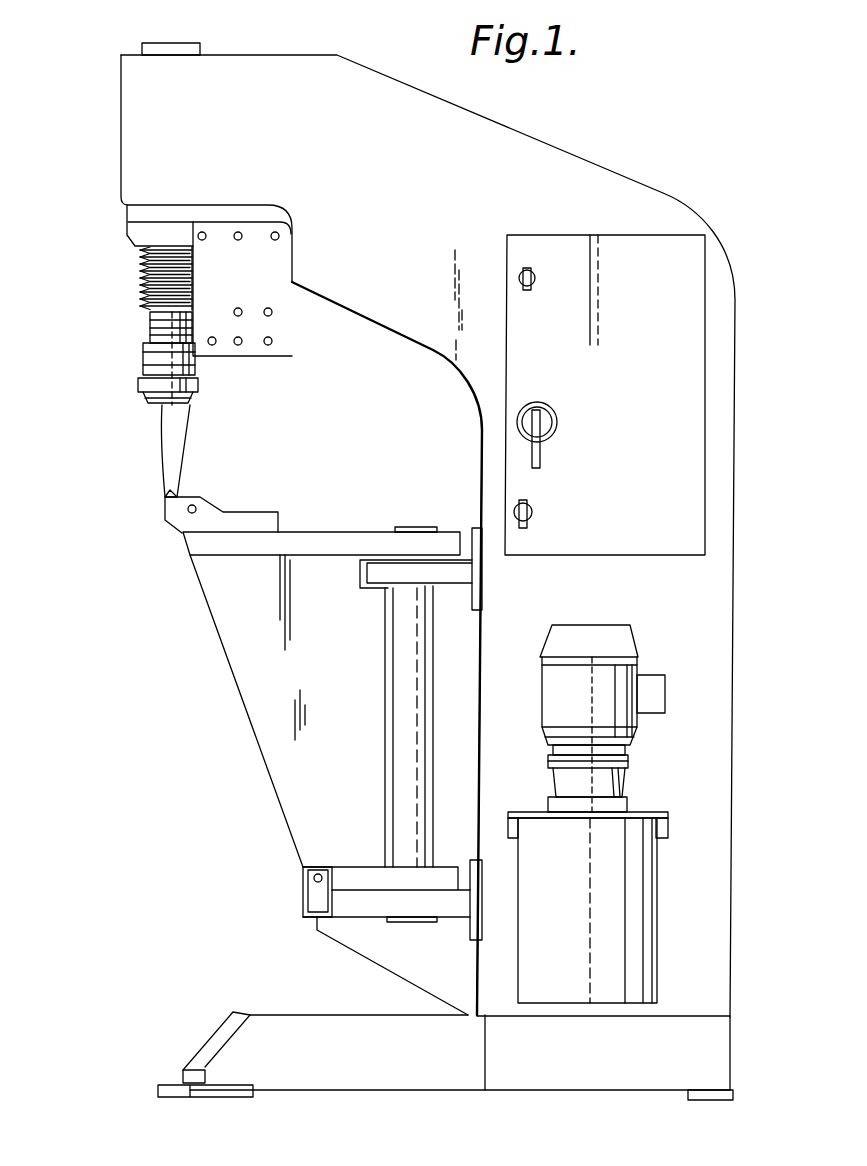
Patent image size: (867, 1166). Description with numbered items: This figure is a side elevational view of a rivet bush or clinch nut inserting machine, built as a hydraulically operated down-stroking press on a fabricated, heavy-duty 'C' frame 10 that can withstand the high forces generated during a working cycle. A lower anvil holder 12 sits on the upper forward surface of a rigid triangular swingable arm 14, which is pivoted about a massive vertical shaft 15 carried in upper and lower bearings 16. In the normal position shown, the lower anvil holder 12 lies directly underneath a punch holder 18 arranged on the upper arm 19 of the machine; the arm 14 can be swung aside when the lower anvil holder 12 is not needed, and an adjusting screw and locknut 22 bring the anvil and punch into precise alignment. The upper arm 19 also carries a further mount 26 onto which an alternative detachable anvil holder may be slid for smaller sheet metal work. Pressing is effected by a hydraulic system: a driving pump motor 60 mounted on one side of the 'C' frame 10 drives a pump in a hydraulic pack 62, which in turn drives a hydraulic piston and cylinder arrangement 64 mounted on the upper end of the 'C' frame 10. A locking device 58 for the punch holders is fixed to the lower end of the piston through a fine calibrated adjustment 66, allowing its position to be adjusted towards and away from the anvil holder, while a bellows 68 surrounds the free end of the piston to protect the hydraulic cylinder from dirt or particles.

The 'C' frame 10 is at (718, 567).
The lower anvil holder 12 is at (250, 515).
The triangular swingable arm 14 is at (248, 665).
The vertical shaft 15 is at (418, 712).
The upper and lower bearings 16 is at (384, 572).
The punch holder 18 is at (165, 453).
The upper arm 19 is at (572, 180).
The adjusting screw and locknut 22 is at (308, 880).
The mount 26 is at (257, 345).
The locking device 58 is at (140, 382).
The driving pump motor 60 is at (625, 683).
The hydraulic pack 62 is at (633, 907).
The hydraulic piston and cylinder arrangement 64 is at (190, 43).
The fine calibrated adjustment 66 is at (150, 325).
The bellows 68 is at (140, 265).